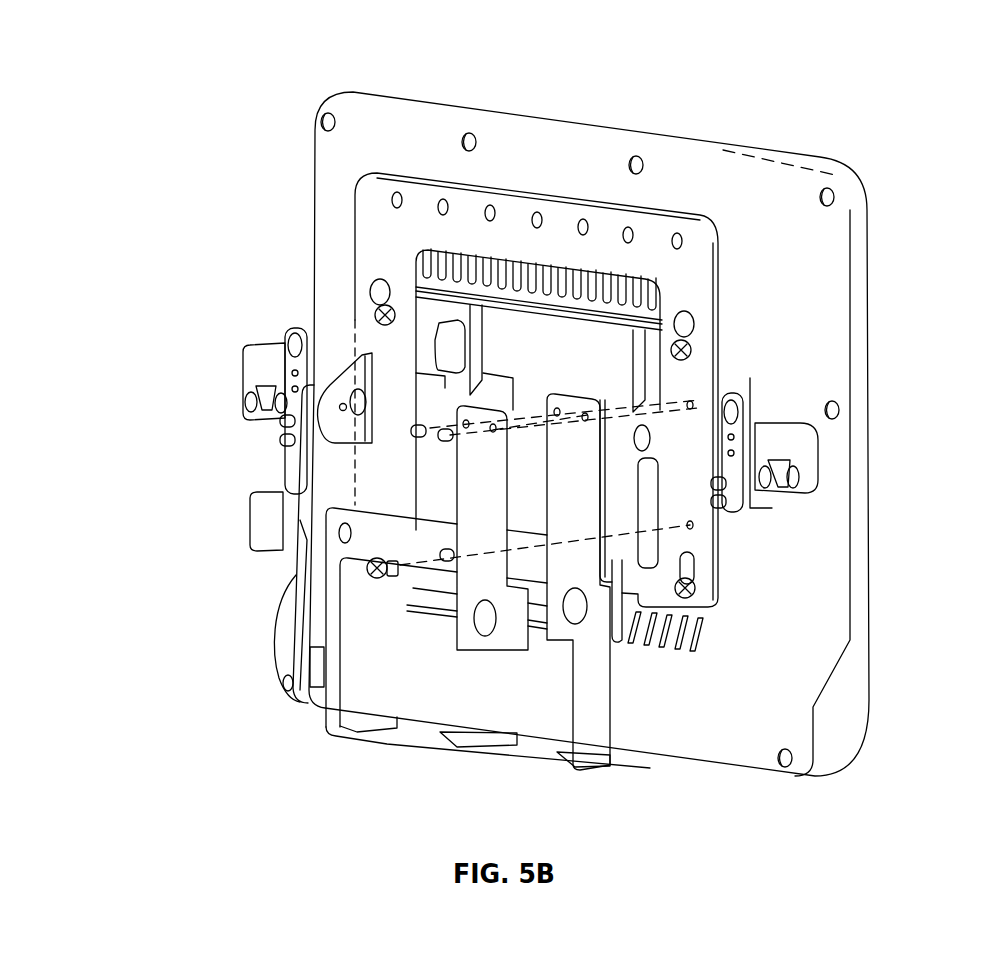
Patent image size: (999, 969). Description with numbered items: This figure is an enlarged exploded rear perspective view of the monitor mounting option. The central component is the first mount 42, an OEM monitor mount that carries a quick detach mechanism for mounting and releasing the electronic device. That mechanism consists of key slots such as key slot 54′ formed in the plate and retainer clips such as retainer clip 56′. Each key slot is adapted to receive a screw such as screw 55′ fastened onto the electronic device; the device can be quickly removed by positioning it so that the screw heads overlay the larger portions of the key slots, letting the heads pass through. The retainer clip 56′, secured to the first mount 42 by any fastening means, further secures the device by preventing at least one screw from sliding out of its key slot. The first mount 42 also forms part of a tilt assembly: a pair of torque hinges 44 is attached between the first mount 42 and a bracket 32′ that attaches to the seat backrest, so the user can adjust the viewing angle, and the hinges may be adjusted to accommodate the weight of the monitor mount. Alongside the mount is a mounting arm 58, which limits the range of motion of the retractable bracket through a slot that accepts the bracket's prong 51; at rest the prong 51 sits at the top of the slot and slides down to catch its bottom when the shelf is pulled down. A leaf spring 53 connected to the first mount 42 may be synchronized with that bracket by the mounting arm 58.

The first mount 42 is at (510, 203).
The torque hinges 44 is at (750, 430).
The key slot 54′ is at (380, 290).
The screw 55′ is at (385, 310).
The bracket 32′ is at (247, 370).
The mounting arm 58 is at (295, 468).
The leaf spring 53 is at (283, 510).
The prong 51 is at (318, 672).
The retainer clip 56′ is at (463, 590).